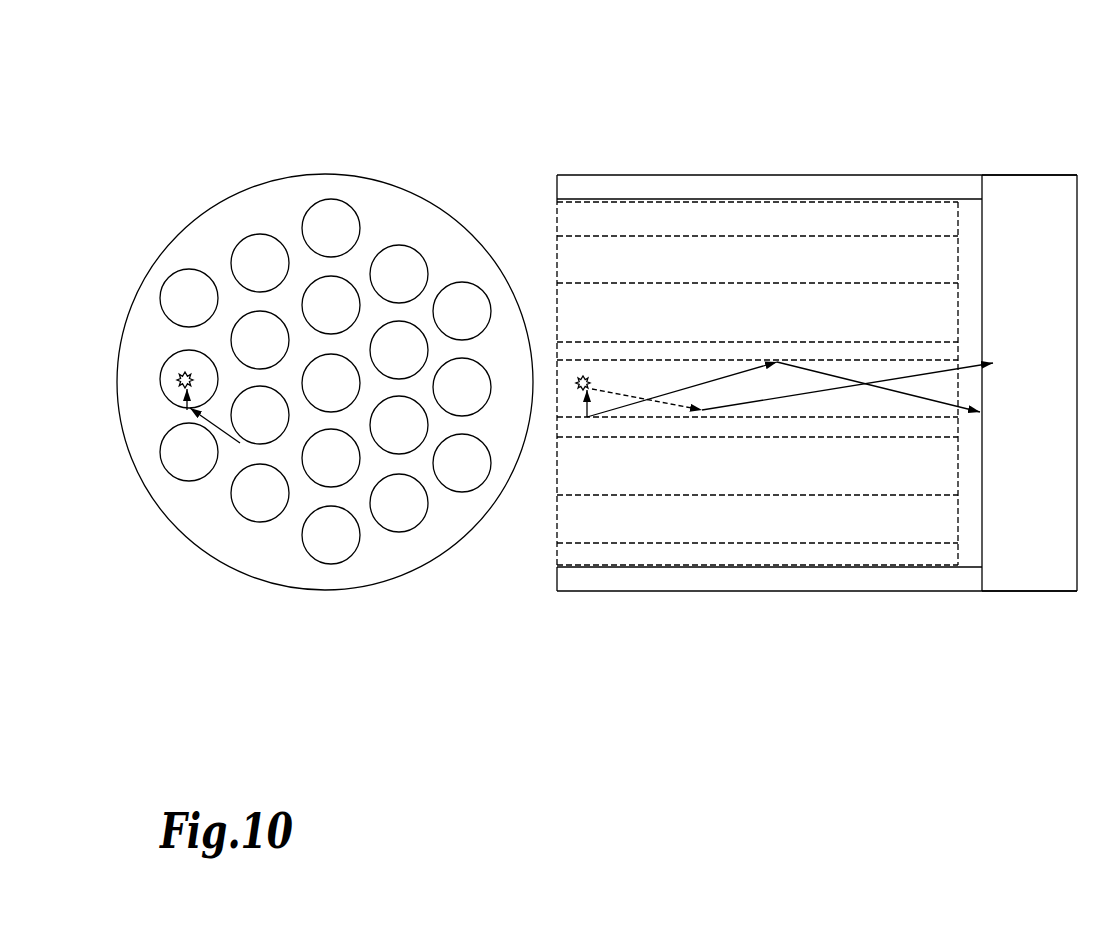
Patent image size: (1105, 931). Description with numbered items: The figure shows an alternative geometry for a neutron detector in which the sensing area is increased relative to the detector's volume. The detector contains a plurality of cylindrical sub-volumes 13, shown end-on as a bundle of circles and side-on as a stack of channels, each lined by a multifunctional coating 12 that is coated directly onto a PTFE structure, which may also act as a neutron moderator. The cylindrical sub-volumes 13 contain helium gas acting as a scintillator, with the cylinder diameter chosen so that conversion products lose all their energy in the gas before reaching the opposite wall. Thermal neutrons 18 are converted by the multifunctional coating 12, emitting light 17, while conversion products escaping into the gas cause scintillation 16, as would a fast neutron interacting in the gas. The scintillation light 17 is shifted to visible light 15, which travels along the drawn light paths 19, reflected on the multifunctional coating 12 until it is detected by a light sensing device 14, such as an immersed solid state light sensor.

The multifunctional coating 12 is at (592, 235).
The cylindrical sub-volumes 13 is at (615, 472).
The light sensing device 14 is at (1029, 383).
The visible light 15 is at (668, 403).
The scintillation 16 is at (181, 374).
The scintillation light 17 is at (961, 387).
The thermal neutrons 18 is at (213, 423).
The light ray 19 is at (183, 389).